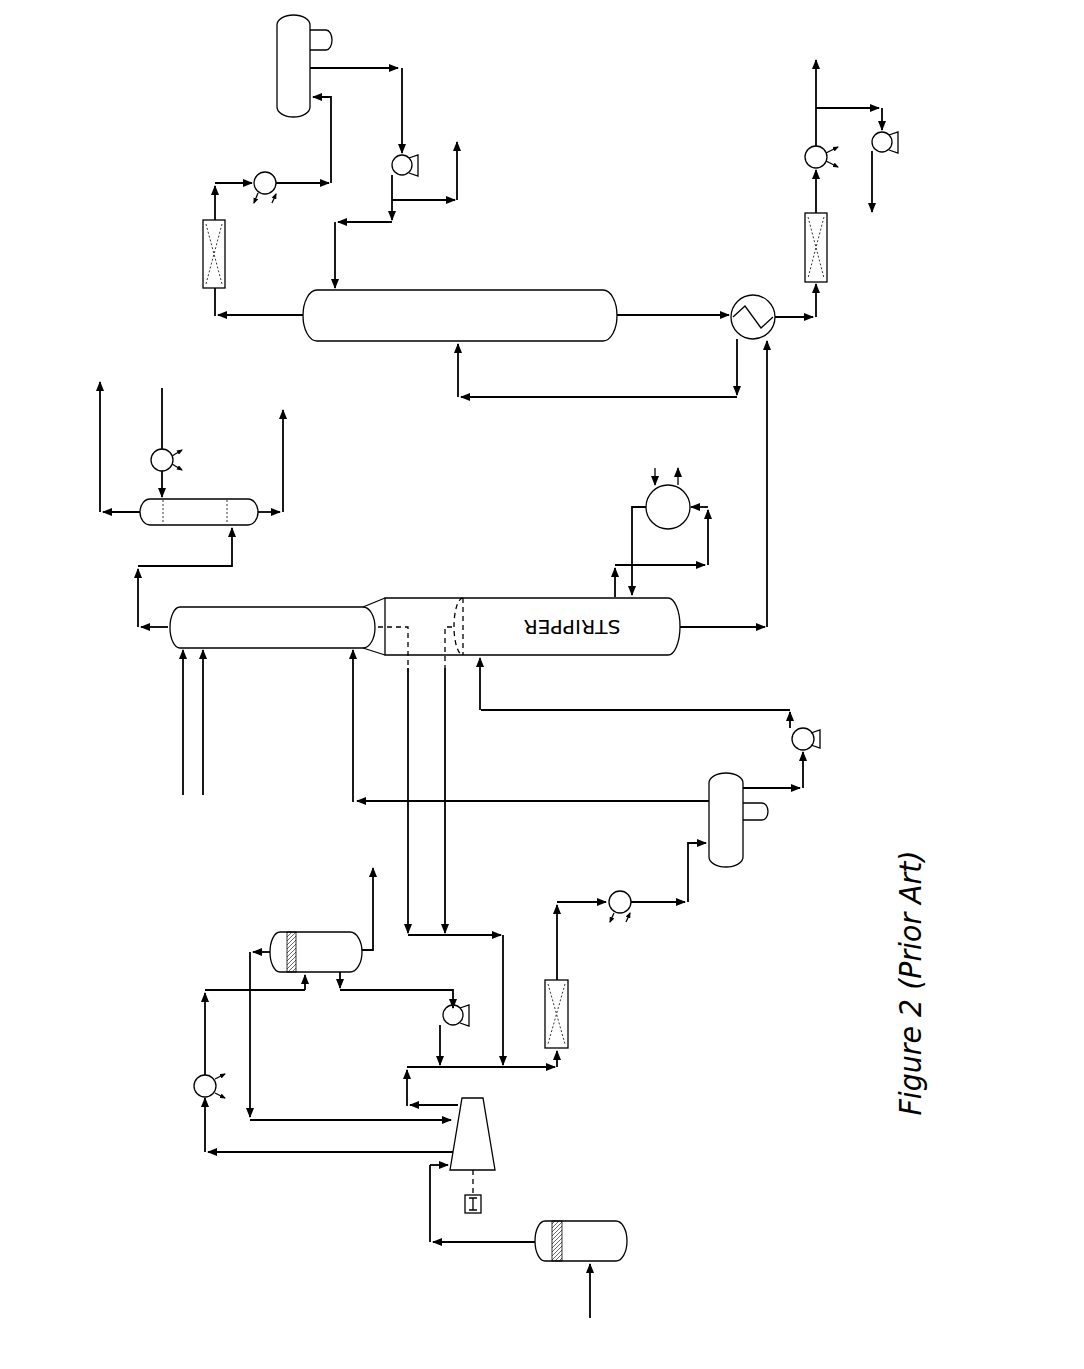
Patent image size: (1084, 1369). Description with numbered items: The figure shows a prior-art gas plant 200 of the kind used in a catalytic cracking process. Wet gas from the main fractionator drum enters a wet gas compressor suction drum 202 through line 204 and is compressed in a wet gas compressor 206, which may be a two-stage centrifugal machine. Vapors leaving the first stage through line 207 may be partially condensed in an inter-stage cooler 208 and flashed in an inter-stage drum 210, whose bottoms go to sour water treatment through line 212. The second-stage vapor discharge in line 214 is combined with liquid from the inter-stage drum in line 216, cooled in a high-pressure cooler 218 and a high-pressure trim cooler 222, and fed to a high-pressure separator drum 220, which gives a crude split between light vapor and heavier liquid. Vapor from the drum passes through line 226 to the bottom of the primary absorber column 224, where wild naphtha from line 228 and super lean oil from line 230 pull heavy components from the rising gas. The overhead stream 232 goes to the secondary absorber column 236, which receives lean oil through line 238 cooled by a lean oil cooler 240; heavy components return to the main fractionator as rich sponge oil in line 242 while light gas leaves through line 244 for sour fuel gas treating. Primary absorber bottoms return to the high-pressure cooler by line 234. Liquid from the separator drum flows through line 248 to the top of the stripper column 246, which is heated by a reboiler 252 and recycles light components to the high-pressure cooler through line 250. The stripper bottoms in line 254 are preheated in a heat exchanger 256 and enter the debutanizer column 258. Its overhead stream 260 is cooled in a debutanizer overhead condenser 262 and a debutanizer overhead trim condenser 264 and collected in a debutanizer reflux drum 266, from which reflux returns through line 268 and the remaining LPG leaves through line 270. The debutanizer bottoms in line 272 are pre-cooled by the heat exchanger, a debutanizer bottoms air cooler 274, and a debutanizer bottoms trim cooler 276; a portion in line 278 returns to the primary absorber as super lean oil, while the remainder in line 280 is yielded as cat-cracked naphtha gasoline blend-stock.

The gas plant 200 is at (108, 884).
The wet gas compressor suction drum 202 is at (565, 1221).
The line 204 is at (590, 1288).
The wet gas compressor 206 is at (497, 1168).
The line 207 is at (322, 1153).
The inter-stage cooler 208 is at (196, 1094).
The inter-stage drum 210 is at (295, 932).
The line 212 is at (373, 880).
The line 214 is at (397, 1105).
The line 216 is at (355, 989).
The high-pressure cooler 218 is at (544, 1040).
The high-pressure separator drum 220 is at (725, 866).
The high-pressure trim cooler 222 is at (612, 914).
The primary absorber column 224 is at (248, 607).
The line 226 is at (516, 803).
The line 228 is at (203, 706).
The line 230 is at (183, 715).
The overhead stream 232 is at (138, 600).
The line 234 is at (407, 676).
The secondary absorber column 236 is at (210, 498).
The line 238 is at (160, 397).
The lean oil cooler 240 is at (170, 452).
The line 242 is at (283, 434).
The line 244 is at (100, 432).
The stripper column 246 is at (555, 597).
The line 248 is at (655, 711).
The line 250 is at (444, 708).
The reboiler 252 is at (692, 475).
The line 254 is at (702, 628).
The heat exchanger 256 is at (772, 330).
The debutanizer column 258 is at (383, 342).
The overhead stream 260 is at (272, 316).
The debutanizer overhead condenser 262 is at (202, 247).
The debutanizer overhead trim condenser 264 is at (258, 173).
The debutanizer reflux drum 266 is at (277, 45).
The line 268 is at (333, 228).
The line 270 is at (457, 144).
The line 272 is at (643, 314).
The debutanizer bottoms air cooler 274 is at (803, 218).
The debutanizer bottoms trim cooler 276 is at (805, 150).
The line 278 is at (872, 158).
The line 280 is at (813, 60).